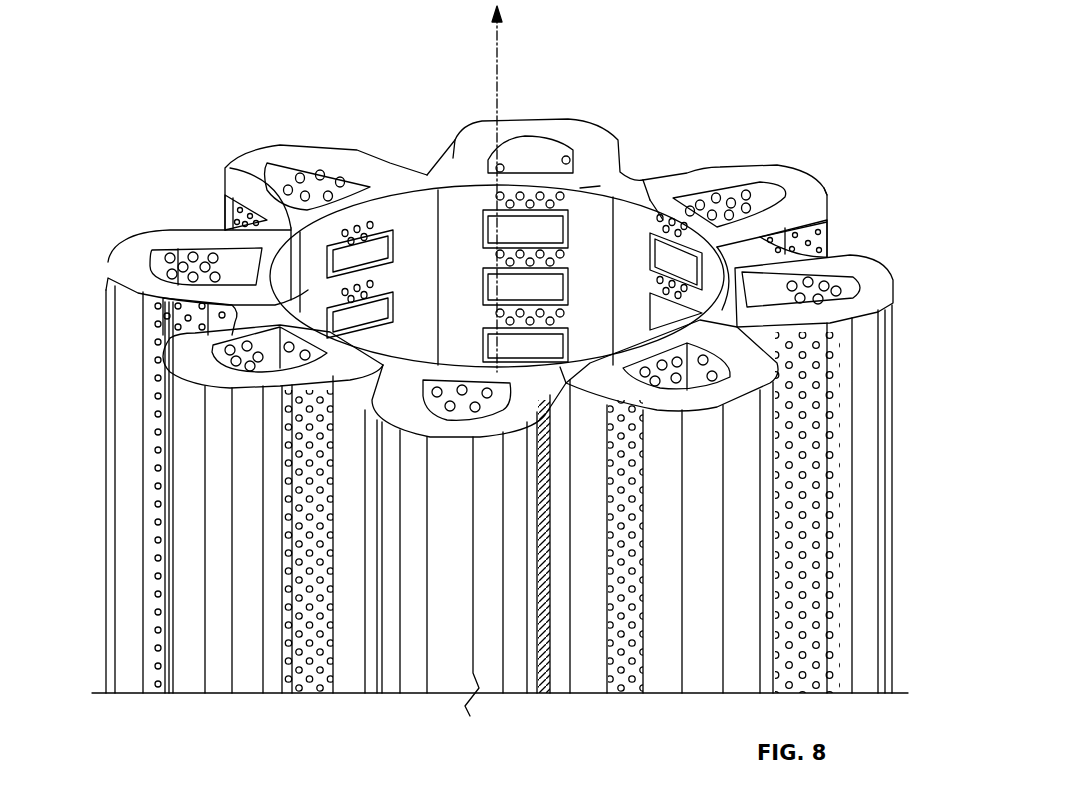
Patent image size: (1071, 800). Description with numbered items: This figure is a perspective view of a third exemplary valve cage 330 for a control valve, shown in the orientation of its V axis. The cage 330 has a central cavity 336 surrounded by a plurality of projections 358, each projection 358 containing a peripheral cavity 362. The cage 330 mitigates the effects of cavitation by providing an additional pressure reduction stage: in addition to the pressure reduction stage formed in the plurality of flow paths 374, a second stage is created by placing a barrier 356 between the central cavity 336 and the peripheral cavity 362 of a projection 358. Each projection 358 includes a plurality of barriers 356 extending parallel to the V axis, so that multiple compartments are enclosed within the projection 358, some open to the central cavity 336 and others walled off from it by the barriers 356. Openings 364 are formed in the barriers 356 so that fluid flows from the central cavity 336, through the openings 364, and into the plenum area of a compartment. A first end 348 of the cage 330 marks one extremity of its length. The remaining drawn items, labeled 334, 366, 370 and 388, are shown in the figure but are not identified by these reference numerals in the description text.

The valve cage 330 is at (156, 68).
The first end 334 is at (488, 133).
The central cavity 336 is at (600, 206).
The first end 348 is at (822, 190).
The barrier 356 is at (395, 282).
The projection 358 is at (250, 168).
The peripheral cavity 362 is at (300, 182).
The opening 364 is at (458, 243).
The web 366 is at (232, 167).
The outer wall 370 is at (872, 636).
The flow path 374 is at (150, 262).
The inner surface 388 is at (640, 218).